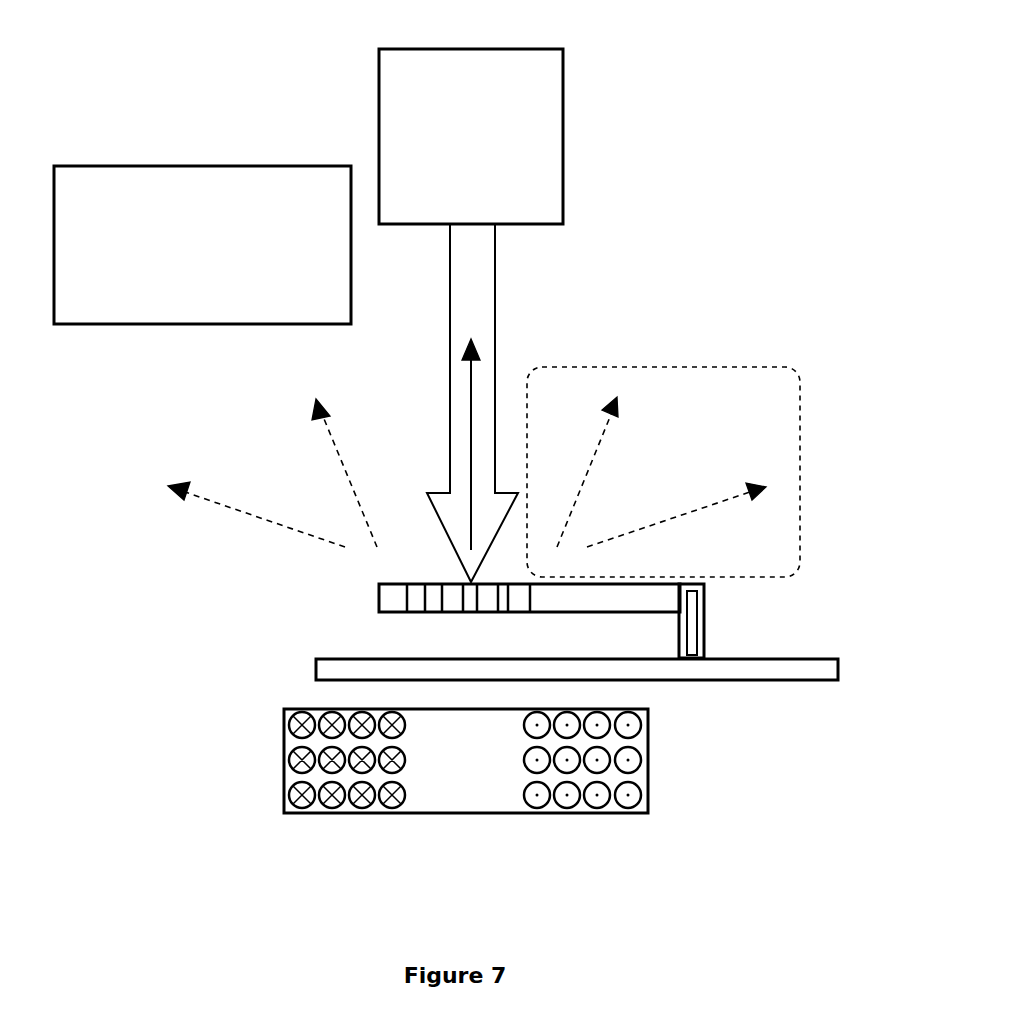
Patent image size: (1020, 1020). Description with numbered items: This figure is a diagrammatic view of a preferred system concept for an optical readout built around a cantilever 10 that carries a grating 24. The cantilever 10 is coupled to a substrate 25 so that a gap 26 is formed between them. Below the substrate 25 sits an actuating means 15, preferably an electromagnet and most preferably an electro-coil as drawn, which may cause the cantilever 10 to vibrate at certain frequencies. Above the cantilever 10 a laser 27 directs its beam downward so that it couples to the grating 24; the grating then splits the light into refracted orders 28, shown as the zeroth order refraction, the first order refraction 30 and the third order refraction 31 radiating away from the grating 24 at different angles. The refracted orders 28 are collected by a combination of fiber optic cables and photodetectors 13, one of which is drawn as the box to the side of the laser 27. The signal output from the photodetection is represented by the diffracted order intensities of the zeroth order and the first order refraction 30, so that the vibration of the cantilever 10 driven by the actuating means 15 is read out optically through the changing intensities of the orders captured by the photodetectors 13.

The laser 27 is at (378, 103).
The photodetectors 13 is at (113, 326).
The refracted orders 28 is at (799, 373).
The first order refraction 30 is at (596, 452).
The third order refraction 31 is at (688, 512).
The cantilever 10 is at (375, 598).
The grating 24 is at (393, 614).
The gap 26 is at (655, 628).
The substrate 25 is at (810, 681).
The actuating means 15 is at (445, 815).